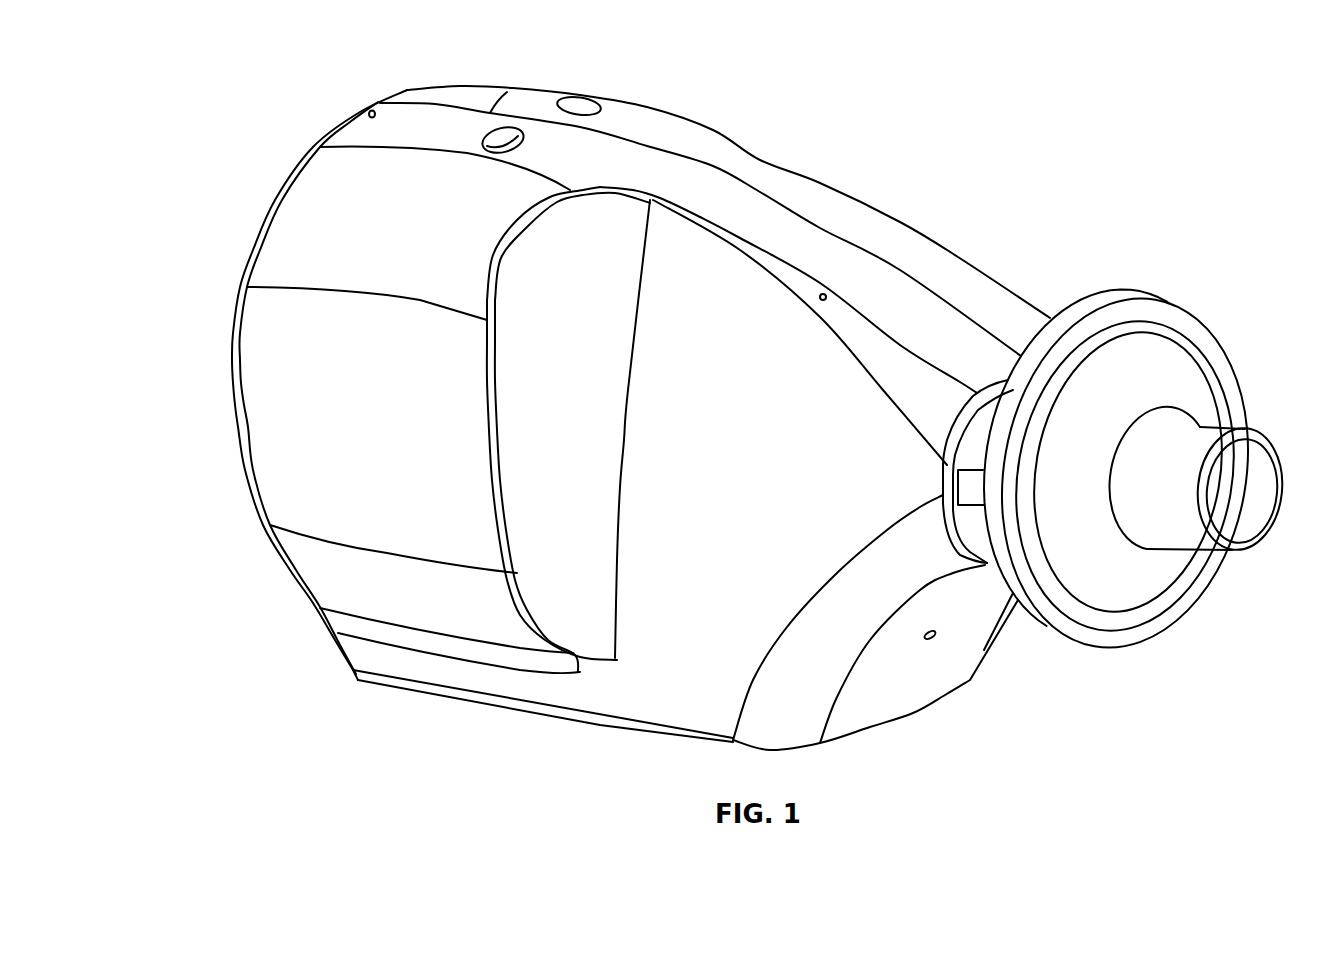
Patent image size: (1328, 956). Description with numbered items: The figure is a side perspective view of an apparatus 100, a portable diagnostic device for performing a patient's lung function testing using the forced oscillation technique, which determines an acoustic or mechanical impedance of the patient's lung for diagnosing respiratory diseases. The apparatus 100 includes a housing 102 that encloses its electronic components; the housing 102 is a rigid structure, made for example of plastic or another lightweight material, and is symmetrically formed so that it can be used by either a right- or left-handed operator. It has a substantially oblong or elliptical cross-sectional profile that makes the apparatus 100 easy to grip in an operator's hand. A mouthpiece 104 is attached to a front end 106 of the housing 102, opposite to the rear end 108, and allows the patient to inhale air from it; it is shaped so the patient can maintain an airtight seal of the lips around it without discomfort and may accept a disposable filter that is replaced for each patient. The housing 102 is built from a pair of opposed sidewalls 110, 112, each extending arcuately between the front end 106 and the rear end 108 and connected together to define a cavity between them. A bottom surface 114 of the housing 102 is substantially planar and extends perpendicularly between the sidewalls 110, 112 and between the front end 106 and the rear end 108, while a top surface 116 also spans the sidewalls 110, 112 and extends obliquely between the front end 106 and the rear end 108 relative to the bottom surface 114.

The apparatus 100 is at (1123, 152).
The housing 102 is at (662, 683).
The mouthpiece 104 is at (1170, 608).
The front end 106 is at (983, 565).
The rear end 108 is at (232, 343).
The sidewall 110 is at (862, 283).
The sidewall 112 is at (903, 225).
The bottom surface 114 is at (533, 713).
The top surface 116 is at (510, 93).